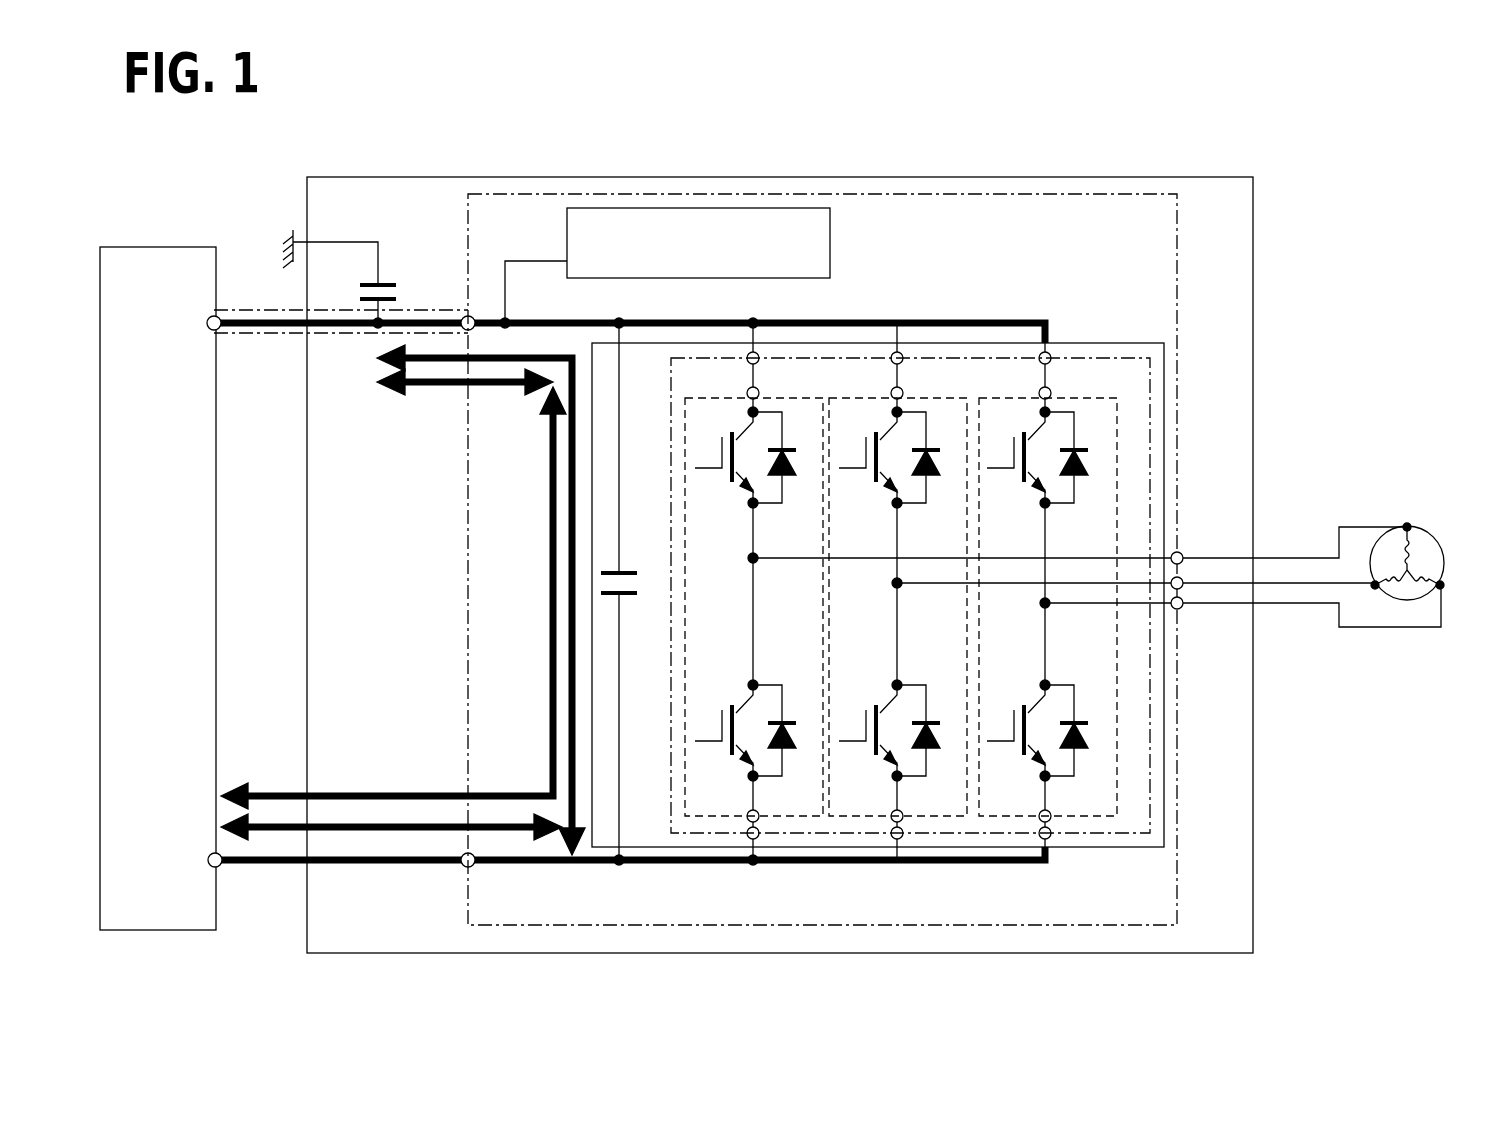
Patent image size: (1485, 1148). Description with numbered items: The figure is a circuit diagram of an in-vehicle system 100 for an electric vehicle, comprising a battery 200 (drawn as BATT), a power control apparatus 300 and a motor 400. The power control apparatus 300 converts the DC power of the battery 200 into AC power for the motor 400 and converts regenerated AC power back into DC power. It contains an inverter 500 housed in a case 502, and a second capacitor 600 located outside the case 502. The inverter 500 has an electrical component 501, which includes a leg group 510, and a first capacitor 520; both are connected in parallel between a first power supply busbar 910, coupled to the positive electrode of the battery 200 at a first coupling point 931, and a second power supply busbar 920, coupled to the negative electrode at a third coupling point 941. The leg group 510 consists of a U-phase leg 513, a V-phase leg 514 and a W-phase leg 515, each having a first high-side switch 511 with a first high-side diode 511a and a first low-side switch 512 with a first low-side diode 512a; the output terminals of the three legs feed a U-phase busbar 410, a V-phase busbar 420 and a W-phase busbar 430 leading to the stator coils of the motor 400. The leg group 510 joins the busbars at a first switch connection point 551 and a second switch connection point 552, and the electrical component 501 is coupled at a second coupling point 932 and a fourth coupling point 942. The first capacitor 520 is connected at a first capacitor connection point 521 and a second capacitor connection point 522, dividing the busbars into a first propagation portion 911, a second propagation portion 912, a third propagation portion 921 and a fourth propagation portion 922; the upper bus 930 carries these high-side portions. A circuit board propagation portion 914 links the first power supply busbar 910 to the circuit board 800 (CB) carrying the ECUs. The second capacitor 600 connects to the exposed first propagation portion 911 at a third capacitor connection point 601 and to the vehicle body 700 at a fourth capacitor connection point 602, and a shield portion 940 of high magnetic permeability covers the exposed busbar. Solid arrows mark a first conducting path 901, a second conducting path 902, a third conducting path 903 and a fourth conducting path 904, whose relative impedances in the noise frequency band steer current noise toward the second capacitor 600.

The in-vehicle system 100 is at (1366, 166).
The battery 200 is at (165, 247).
The power control apparatus 300 is at (1257, 211).
The motor 400 is at (1453, 533).
The U-phase busbar 410 is at (1262, 560).
The V-phase busbar 420 is at (1308, 585).
The W-phase busbar 430 is at (1378, 629).
The inverter 500 is at (913, 581).
The electrical component 501 is at (1152, 381).
The case 502 is at (1178, 300).
The leg group 510 is at (1130, 336).
The first high-side switch 511 is at (724, 458).
The first high-side diode 511a is at (790, 480).
The first low-side switch 512 is at (724, 726).
The first low-side diode 512a is at (790, 752).
The U-phase leg 513 is at (773, 397).
The V-phase leg 514 is at (917, 397).
The W-phase leg 515 is at (1118, 398).
The first capacitor 520 is at (622, 572).
The first capacitor connection point 521 is at (620, 320).
The second capacitor connection point 522 is at (618, 866).
The first switch connection point 551 is at (746, 392).
The second switch connection point 552 is at (747, 817).
The second capacitor 600 is at (325, 277).
The third capacitor connection point 601 is at (376, 330).
The fourth capacitor connection point 602 is at (300, 242).
The vehicle body 700 is at (291, 232).
The circuit board 800 is at (830, 250).
The first conducting path 901 is at (405, 832).
The second conducting path 902 is at (512, 352).
The third conducting path 903 is at (445, 390).
The fourth conducting path 904 is at (440, 790).
The first power supply busbar 910 is at (276, 330).
The first propagation portion 911 is at (528, 320).
The second propagation portion 912 is at (700, 320).
The circuit board propagation portion 914 is at (524, 260).
The second power supply busbar 920 is at (288, 864).
The third propagation portion 921 is at (524, 866).
The fourth propagation portion 922 is at (704, 866).
The high-side bus 930 is at (629, 333).
The first coupling point 931 is at (218, 314).
The second coupling point 932 is at (760, 350).
The shield portion 940 is at (432, 308).
The third coupling point 941 is at (220, 867).
The fourth coupling point 942 is at (762, 836).